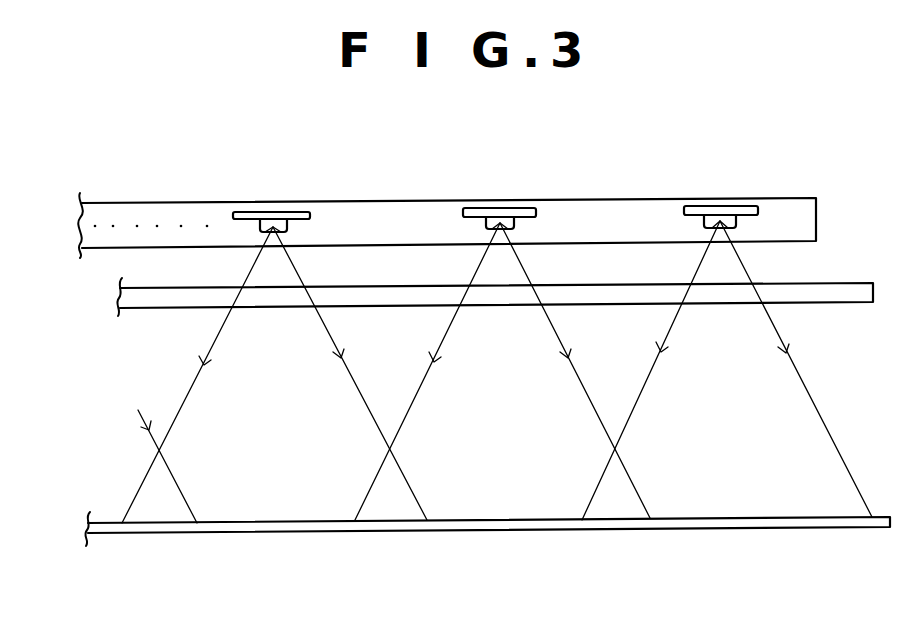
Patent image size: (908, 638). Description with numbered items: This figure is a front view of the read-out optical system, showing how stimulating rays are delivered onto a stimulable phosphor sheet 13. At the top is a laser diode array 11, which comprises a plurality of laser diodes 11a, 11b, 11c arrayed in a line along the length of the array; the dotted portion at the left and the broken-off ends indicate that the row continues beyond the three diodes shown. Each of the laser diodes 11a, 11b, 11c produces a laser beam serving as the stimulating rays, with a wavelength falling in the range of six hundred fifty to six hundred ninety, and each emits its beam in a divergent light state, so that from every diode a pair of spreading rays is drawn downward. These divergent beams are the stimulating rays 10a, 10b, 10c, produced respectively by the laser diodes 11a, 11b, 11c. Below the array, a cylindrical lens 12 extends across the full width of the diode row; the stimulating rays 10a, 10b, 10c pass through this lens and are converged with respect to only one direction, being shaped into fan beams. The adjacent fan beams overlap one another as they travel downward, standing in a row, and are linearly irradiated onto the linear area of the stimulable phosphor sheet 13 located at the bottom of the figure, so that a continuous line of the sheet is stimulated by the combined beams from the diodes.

The laser diode array 11 is at (596, 197).
The laser diode 11a is at (722, 206).
The laser diode 11b is at (495, 208).
The laser diode 11c is at (267, 212).
The cylindrical lens 12 is at (840, 283).
The stimulable phosphor sheet 13 is at (758, 518).
The stimulating rays 10a is at (630, 417).
The stimulating rays 10b is at (400, 427).
The stimulating rays 10c is at (176, 418).